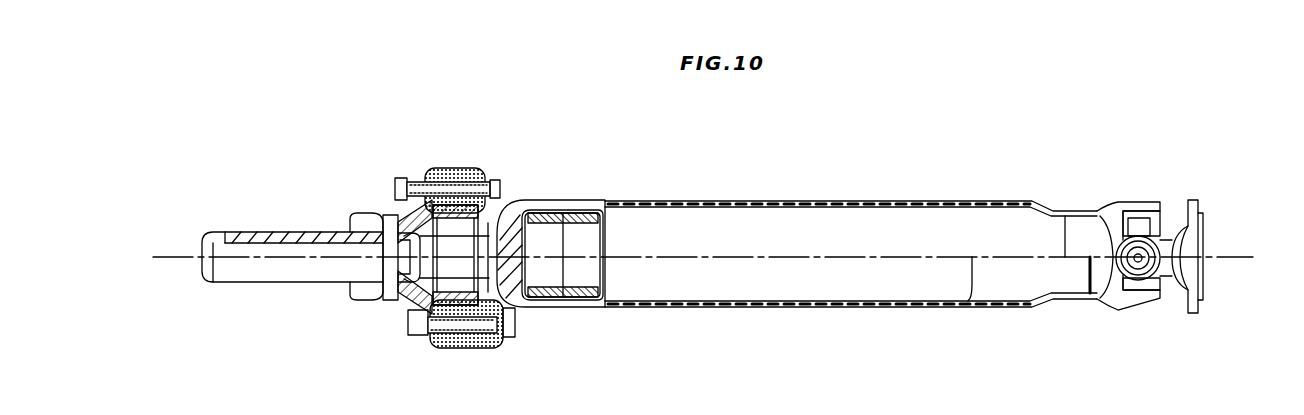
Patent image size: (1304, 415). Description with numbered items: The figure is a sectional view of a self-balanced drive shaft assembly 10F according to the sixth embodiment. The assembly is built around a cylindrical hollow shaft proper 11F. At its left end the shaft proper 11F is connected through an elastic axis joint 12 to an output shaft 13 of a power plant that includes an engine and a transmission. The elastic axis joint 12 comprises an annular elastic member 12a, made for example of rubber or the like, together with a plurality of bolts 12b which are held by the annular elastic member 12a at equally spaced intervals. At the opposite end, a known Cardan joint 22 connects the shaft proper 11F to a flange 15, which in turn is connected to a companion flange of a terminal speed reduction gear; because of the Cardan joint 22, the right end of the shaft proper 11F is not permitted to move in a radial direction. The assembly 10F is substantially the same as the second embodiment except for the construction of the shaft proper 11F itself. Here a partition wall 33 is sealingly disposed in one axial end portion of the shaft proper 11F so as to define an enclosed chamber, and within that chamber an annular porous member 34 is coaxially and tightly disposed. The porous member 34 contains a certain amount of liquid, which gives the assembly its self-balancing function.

The self-balanced drive shaft assembly 10F is at (910, 197).
The cylindrical shaft proper 11F is at (805, 200).
The elastic axis joint 12 is at (462, 168).
The annular elastic member 12a is at (416, 300).
The bolts 12b is at (440, 168).
The output shaft 13 is at (278, 226).
The flange 15 is at (1196, 242).
The Cardan joint 22 is at (1139, 205).
The partition wall 33 is at (612, 298).
The annular porous member 34 is at (590, 198).